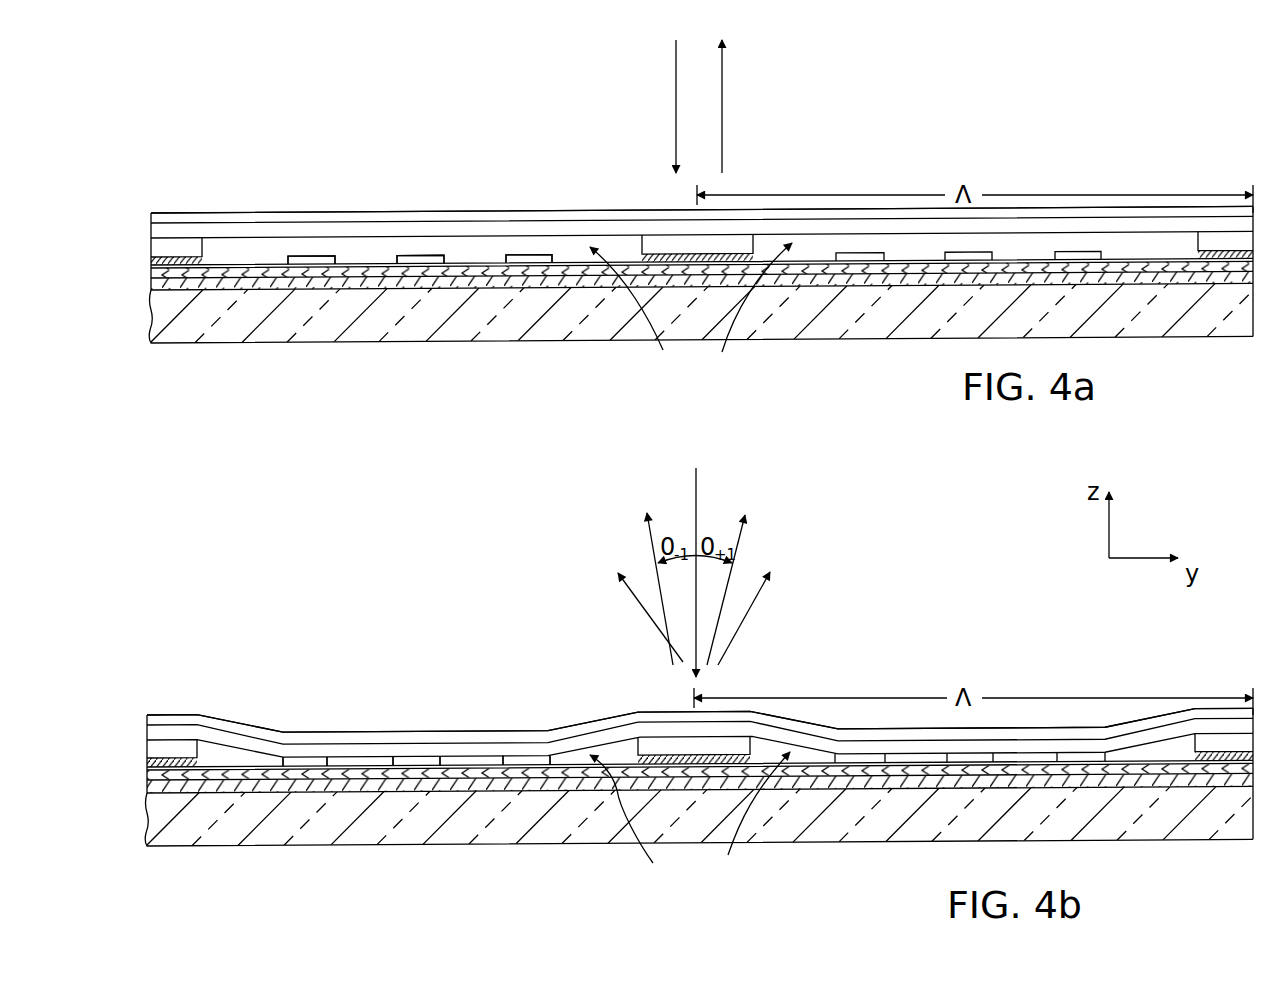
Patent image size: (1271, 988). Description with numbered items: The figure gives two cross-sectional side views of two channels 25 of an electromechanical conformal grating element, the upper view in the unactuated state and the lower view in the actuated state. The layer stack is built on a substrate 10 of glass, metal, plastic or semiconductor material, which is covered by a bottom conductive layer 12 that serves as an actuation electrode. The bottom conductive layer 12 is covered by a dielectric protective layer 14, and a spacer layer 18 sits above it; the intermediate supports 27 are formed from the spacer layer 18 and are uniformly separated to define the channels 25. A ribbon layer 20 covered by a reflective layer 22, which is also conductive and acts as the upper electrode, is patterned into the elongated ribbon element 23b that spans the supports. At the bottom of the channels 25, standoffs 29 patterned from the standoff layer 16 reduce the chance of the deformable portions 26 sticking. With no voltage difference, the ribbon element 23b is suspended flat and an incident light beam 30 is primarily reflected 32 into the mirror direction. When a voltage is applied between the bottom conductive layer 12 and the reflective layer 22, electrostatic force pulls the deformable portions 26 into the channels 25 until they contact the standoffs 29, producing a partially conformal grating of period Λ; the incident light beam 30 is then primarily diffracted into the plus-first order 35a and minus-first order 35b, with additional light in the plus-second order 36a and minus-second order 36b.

In FIG. 4a, the substrate 10 is at (177, 330).
In FIG. 4b, the substrate 10 is at (157, 817).
In FIG. 4a, the bottom conductive layer 12 is at (150, 290).
In FIG. 4b, the bottom conductive layer 12 is at (147, 790).
In FIG. 4a, the dielectric protective layer 14 is at (150, 278).
In FIG. 4b, the dielectric protective layer 14 is at (147, 775).
In FIG. 4a, the standoff layer 16 is at (150, 266).
In FIG. 4b, the standoff layer 16 is at (147, 763).
In FIG. 4a, the spacer layer 18 is at (150, 247).
In FIG. 4b, the spacer layer 18 is at (147, 748).
In FIG. 4a, the ribbon layer 20 is at (150, 232).
In FIG. 4b, the ribbon layer 20 is at (147, 734).
In FIG. 4a, the reflective layer 22 is at (150, 218).
In FIG. 4b, the reflective layer 22 is at (147, 720).
In FIG. 4a, the elongated ribbon element 23b is at (358, 212).
In FIG. 4b, the elongated ribbon element 23b is at (360, 732).
In FIG. 4a, the channels 25 is at (691, 315).
In FIG. 4b, the channels 25 is at (690, 820).
In FIG. 4a, the deformable portions 26 is at (205, 153).
In FIG. 4b, the deformable portions 26 is at (612, 672).
In FIG. 4a, the intermediate supports 27 is at (655, 241).
In FIG. 4b, the intermediate supports 27 is at (650, 746).
In FIG. 4a, the standoffs 29 is at (298, 256).
In FIG. 4b, the standoffs 29 is at (305, 760).
In FIG. 4a, the incident light beam 30 is at (673, 107).
In FIG. 4b, the incident light beam 30 is at (694, 517).
In FIG. 4a, the reflected light 32 is at (723, 108).
In FIG. 4b, the +1st order diffracted light 35a is at (737, 555).
In FIG. 4b, the −1st order diffracted light 35b is at (658, 570).
In FIG. 4b, the +2nd order diffracted light 36a is at (747, 620).
In FIG. 4b, the −2nd order diffracted light 36b is at (653, 635).